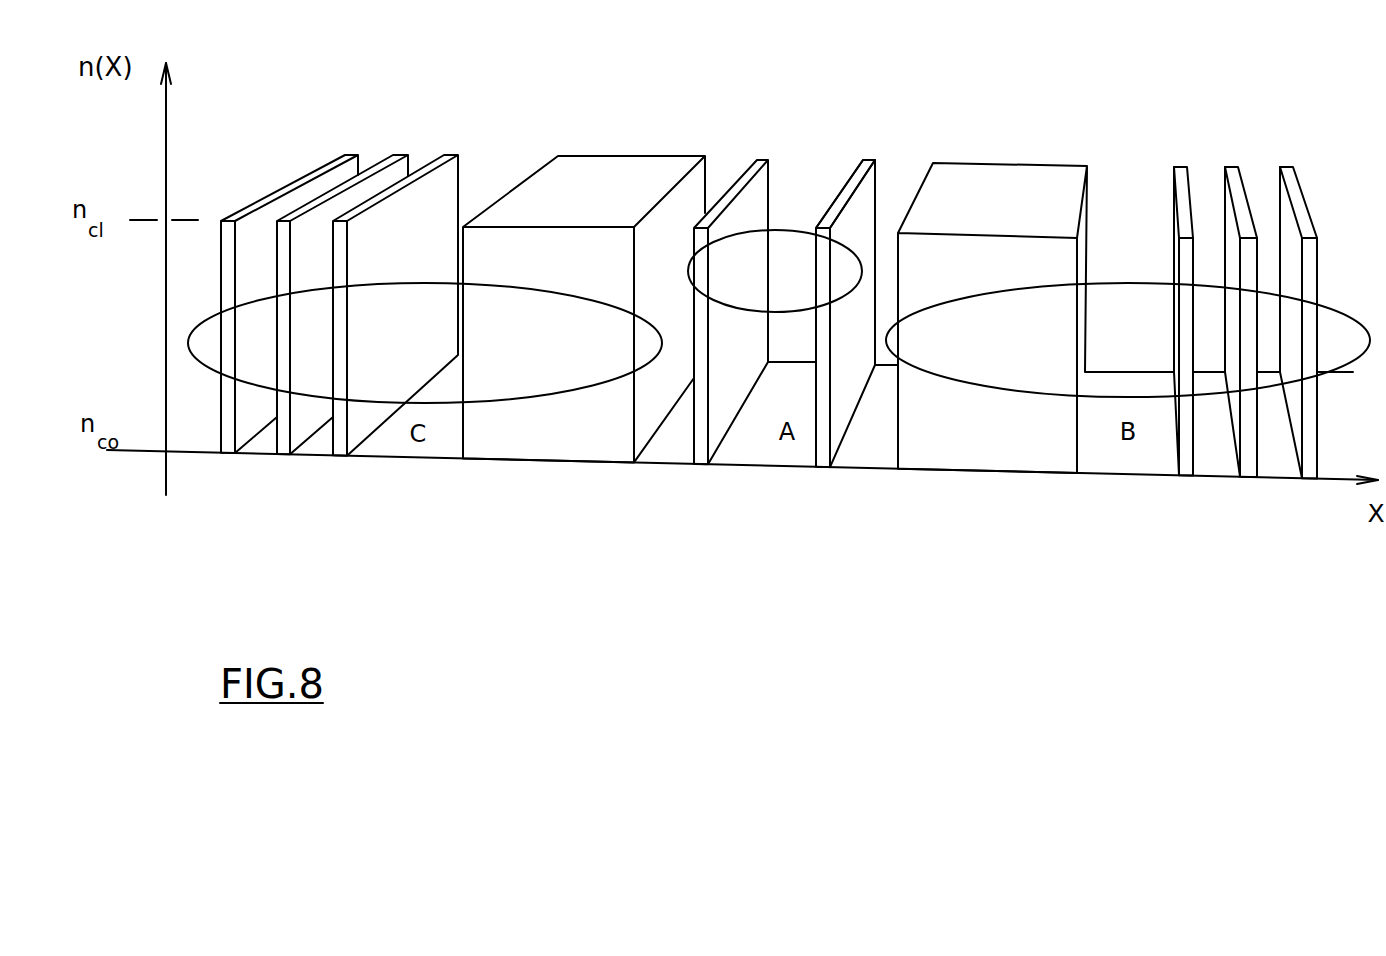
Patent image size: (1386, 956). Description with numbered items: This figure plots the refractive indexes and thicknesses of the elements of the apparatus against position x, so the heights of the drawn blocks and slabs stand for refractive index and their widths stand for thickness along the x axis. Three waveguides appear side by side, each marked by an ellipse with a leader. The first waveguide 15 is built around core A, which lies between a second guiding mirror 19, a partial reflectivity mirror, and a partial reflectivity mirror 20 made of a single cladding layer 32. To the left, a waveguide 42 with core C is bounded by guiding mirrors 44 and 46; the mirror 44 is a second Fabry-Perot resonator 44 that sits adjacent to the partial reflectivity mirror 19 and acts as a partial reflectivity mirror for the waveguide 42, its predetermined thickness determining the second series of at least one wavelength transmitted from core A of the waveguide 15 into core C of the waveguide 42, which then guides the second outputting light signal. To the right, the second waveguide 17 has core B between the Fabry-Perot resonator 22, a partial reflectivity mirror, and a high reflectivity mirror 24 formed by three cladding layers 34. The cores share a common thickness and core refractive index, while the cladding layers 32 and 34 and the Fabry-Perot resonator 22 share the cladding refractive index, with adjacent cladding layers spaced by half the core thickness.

The guiding mirror 46 is at (348, 477).
The second Fabry-Perot resonator 44 is at (633, 482).
The second guiding mirror 19 is at (661, 485).
The partial reflectivity mirror 20 is at (788, 488).
The cladding layer 32 is at (853, 183).
The Fabry-Perot resonator 22 is at (1073, 488).
The high reflectivity mirror 24 is at (1157, 498).
The cladding layers 34 is at (1290, 168).
The waveguide 42 is at (427, 283).
The first waveguide 15 is at (778, 231).
The second waveguide 17 is at (1129, 283).